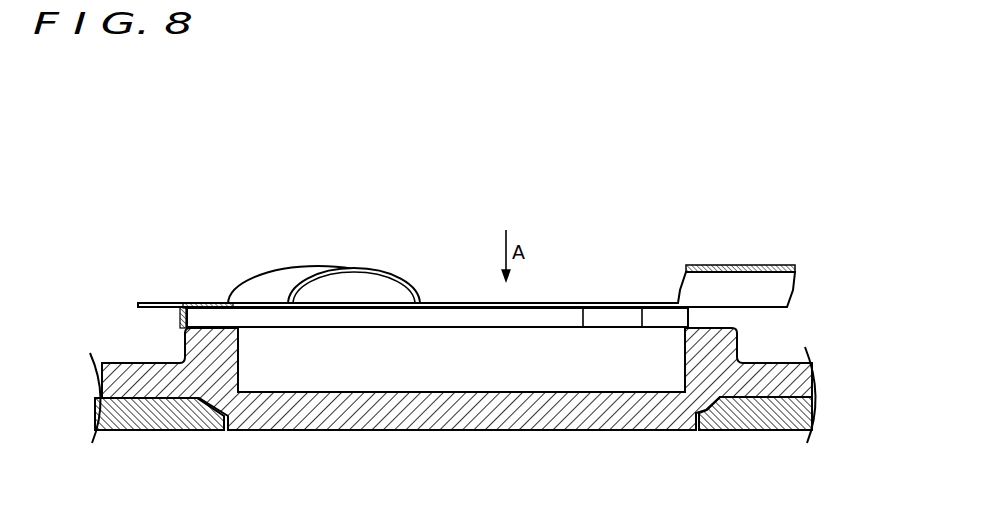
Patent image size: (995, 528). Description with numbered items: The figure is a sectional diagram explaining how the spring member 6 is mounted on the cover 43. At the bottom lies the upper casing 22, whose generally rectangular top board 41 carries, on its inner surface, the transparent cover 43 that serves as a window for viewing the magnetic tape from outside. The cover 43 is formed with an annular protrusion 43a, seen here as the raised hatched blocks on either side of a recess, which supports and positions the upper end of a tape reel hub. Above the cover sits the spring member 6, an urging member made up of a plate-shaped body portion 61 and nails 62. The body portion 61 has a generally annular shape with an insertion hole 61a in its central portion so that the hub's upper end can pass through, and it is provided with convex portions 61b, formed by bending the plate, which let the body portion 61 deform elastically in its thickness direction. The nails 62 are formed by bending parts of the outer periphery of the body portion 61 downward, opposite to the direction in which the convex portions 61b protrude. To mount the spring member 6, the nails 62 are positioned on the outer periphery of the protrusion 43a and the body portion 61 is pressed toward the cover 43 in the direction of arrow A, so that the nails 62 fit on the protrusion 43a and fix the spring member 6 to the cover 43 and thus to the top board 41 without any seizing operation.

The spring member 6 is at (462, 263).
The upper casing 22 is at (142, 452).
The top board 41 is at (182, 431).
The cover 43 is at (420, 430).
The protrusion 43a is at (238, 355).
The body portion 61 is at (598, 303).
The insertion hole 61a is at (462, 303).
The convex portion 61b is at (352, 268).
The nail 62 is at (180, 323).